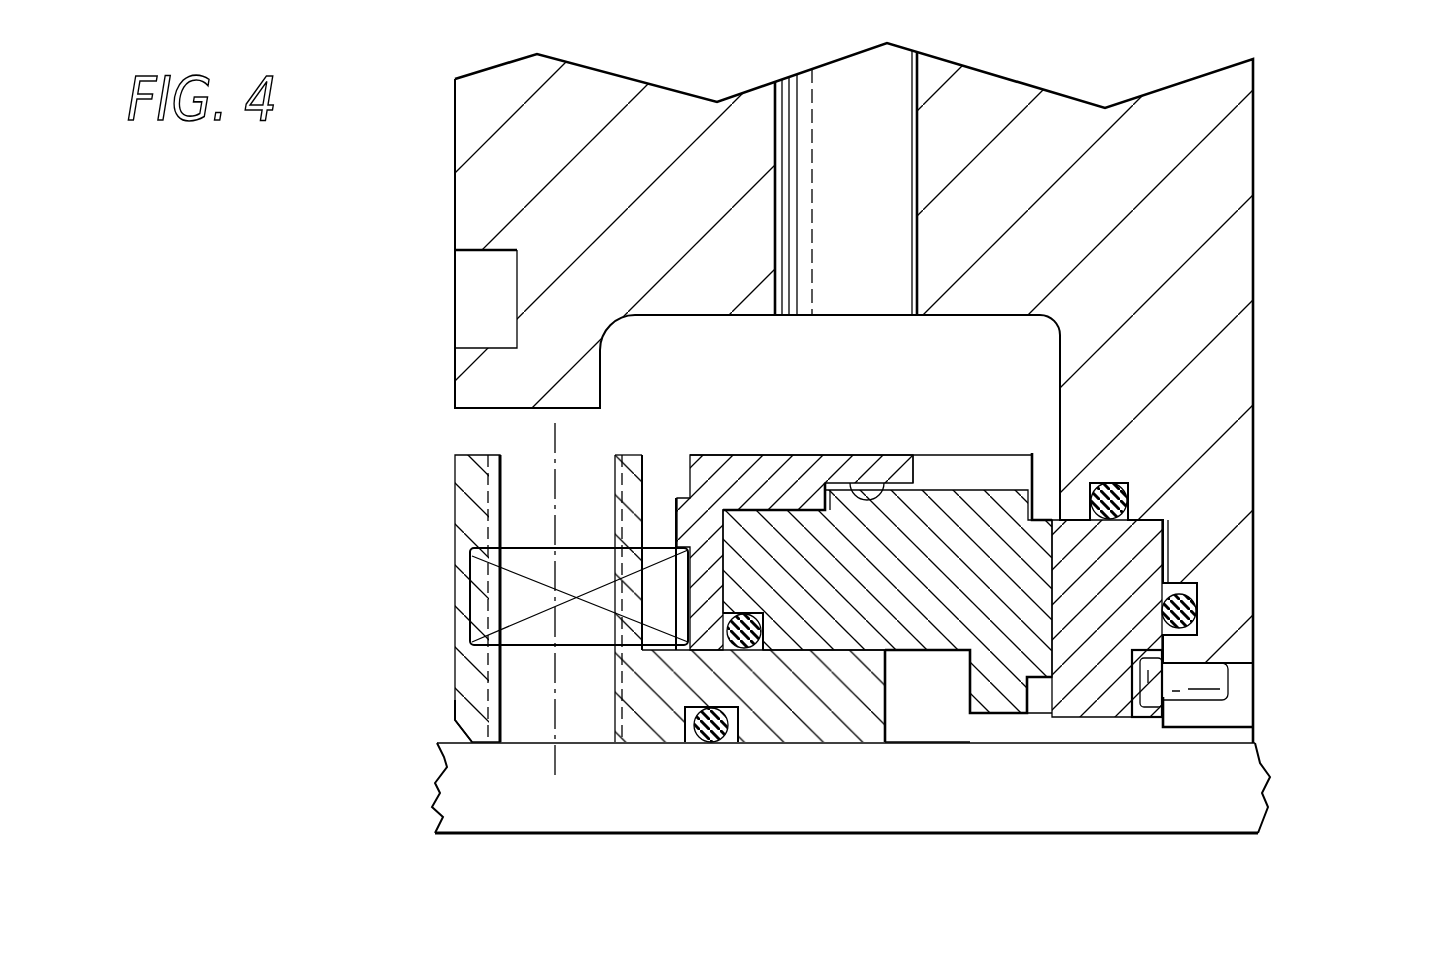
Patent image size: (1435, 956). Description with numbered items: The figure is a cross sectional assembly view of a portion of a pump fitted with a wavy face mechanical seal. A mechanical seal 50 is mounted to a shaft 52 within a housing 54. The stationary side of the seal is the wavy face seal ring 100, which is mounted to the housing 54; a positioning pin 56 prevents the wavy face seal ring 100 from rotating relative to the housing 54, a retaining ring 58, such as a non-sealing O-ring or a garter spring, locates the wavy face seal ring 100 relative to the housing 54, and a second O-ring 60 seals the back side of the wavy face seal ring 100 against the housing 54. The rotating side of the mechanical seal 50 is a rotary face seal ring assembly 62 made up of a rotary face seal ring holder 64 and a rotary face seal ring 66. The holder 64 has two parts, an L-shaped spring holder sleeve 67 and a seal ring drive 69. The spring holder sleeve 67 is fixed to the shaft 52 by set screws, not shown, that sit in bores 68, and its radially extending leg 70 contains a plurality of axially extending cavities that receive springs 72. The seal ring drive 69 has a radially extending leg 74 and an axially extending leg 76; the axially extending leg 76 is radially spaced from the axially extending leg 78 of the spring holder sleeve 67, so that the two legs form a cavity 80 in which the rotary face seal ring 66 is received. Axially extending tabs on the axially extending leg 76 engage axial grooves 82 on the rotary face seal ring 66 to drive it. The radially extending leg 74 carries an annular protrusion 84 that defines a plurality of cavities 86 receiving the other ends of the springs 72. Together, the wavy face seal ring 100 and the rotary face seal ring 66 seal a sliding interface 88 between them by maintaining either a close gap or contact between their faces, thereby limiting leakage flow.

The mechanical seal 50 is at (990, 358).
The shaft 52 is at (1268, 786).
The housing 54 is at (1254, 272).
The positioning pin 56 is at (1235, 676).
The retaining ring 58 is at (1122, 497).
The second O-ring 60 is at (1200, 600).
The rotary face seal ring assembly 62 is at (890, 668).
The rotary face seal ring holder 64 is at (455, 480).
The rotary face seal ring 66 is at (963, 460).
The L-shaped spring holder sleeve 67 is at (455, 683).
The bores 68 is at (615, 473).
The seal ring drive 69 is at (868, 457).
The radially extending leg 70 is at (455, 542).
The springs 72 is at (660, 547).
The radially extending leg 74 is at (686, 455).
The axially extending leg 76 is at (787, 457).
The axially extending leg 78 is at (910, 743).
The cavity 80 is at (882, 478).
The axial grooves 82 is at (1003, 460).
The annular protrusion 84 is at (678, 505).
The cavities 86 is at (687, 585).
The sliding interface 88 is at (1046, 688).
The wavy face seal ring 100 is at (1103, 720).